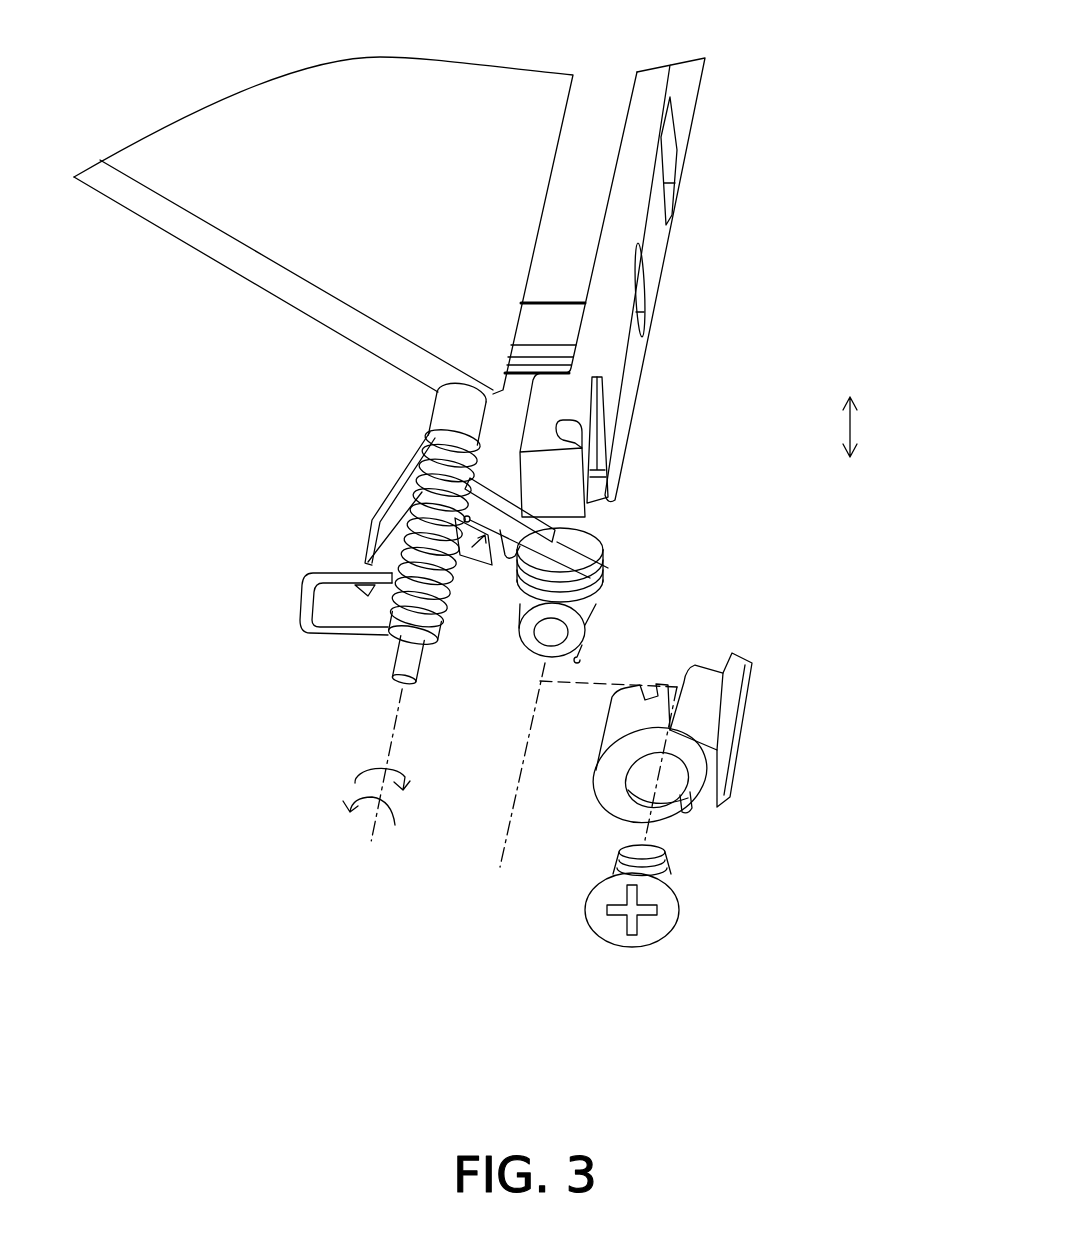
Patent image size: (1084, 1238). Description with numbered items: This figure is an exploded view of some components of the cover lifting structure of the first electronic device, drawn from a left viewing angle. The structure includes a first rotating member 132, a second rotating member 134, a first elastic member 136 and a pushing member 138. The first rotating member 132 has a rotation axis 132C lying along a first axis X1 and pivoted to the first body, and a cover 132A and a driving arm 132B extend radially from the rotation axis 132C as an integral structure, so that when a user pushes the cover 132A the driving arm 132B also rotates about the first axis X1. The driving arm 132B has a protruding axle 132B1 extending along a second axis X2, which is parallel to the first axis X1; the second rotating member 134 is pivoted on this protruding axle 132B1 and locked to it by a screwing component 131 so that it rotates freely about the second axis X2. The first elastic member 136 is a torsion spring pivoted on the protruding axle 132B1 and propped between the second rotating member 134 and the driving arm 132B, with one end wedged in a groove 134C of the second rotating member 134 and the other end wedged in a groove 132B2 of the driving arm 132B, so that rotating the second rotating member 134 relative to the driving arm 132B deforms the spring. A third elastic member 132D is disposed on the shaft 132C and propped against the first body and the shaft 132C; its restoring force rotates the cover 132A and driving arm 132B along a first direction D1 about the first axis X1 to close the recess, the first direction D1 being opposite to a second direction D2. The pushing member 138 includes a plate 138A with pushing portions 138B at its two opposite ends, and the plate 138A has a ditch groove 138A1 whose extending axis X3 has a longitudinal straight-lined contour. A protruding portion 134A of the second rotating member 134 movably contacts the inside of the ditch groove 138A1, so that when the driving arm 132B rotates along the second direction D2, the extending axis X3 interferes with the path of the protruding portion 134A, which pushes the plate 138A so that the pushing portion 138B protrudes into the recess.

The screwing component 131 is at (650, 933).
The first rotating member 132 is at (243, 332).
The cover 132A is at (368, 327).
The driving arm 132B is at (475, 503).
The protruding axle 132B1 is at (582, 613).
The groove 132B2 is at (387, 652).
The rotation axis 132C is at (455, 410).
The third elastic member 132D is at (433, 537).
The second rotating member 134 is at (717, 760).
The protruding portion 134A is at (690, 678).
The groove 134C is at (683, 812).
The first elastic member 136 is at (590, 572).
The pushing member 138 is at (789, 195).
The plate 138A is at (657, 217).
The pushing portion 138B is at (553, 330).
The ditch groove 138A1 is at (583, 431).
The first axis X1 is at (393, 695).
The second axis X2 is at (515, 763).
The extending axis X3 is at (865, 427).
The first direction D1 is at (383, 827).
The second direction D2 is at (396, 763).